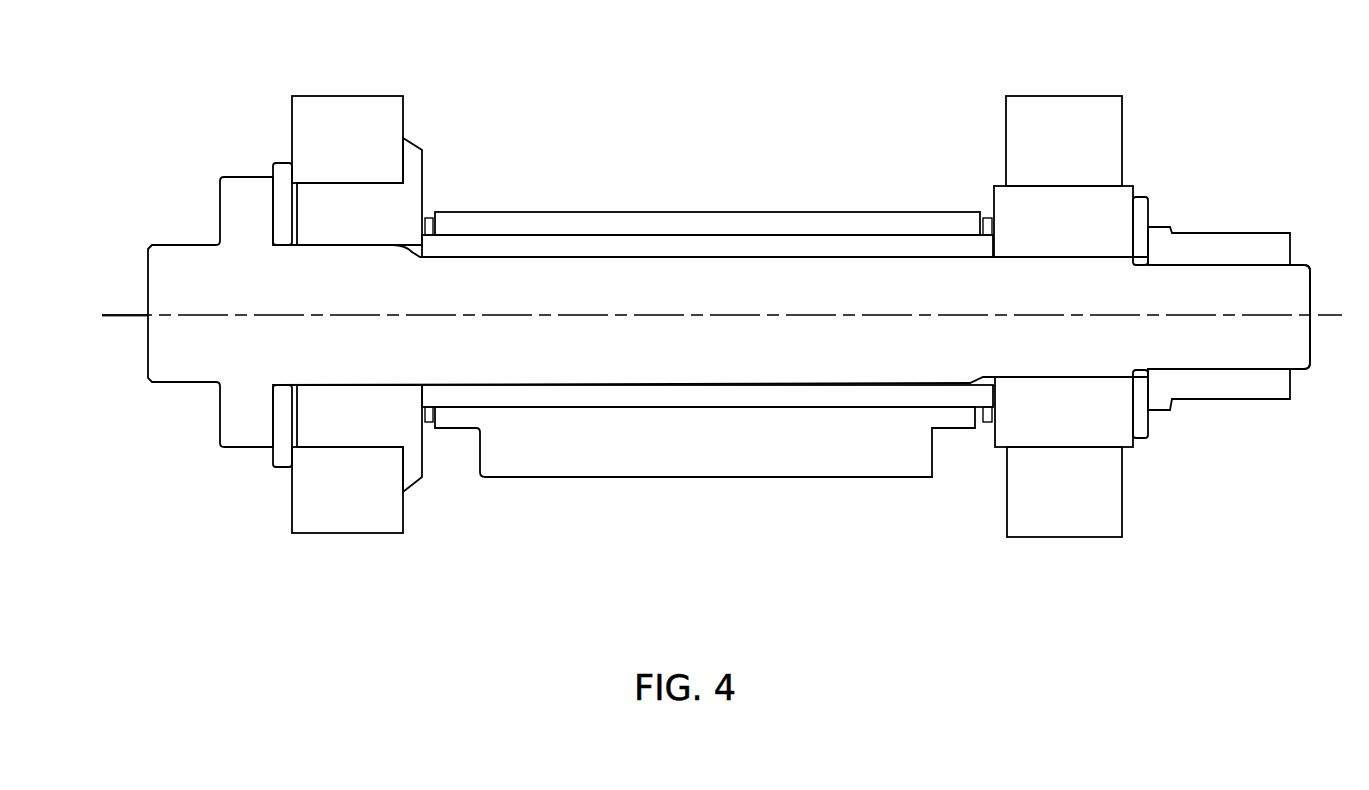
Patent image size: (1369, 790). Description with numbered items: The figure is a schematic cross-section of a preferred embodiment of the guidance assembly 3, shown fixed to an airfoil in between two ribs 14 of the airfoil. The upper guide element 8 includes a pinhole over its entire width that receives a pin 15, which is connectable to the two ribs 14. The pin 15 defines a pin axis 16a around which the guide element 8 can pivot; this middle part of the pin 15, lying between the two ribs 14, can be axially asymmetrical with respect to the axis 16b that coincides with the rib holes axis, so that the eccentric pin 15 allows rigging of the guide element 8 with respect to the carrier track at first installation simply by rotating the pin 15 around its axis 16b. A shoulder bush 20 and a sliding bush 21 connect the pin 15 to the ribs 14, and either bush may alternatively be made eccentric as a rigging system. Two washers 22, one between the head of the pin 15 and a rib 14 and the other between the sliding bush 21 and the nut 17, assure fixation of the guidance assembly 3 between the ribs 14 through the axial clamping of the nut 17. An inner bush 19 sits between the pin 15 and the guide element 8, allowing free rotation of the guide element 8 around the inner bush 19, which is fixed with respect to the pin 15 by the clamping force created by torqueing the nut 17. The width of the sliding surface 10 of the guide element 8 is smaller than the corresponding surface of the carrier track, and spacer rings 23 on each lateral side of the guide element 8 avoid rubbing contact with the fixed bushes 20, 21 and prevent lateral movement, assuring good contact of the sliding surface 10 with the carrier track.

The guidance assembly 3 is at (1244, 179).
The upper guide element 8 is at (610, 218).
The sliding surface 10 is at (710, 478).
The ribs 14 is at (350, 122).
The pin 15 is at (1300, 290).
The pin axis 16a is at (128, 317).
The axis 16b is at (110, 313).
The nut 17 is at (1240, 385).
The inner bush 19 is at (724, 240).
The shoulder bush 20 is at (345, 422).
The sliding bush 21 is at (1072, 422).
The washers 22 is at (285, 172).
The spacer ring 23 is at (430, 425).